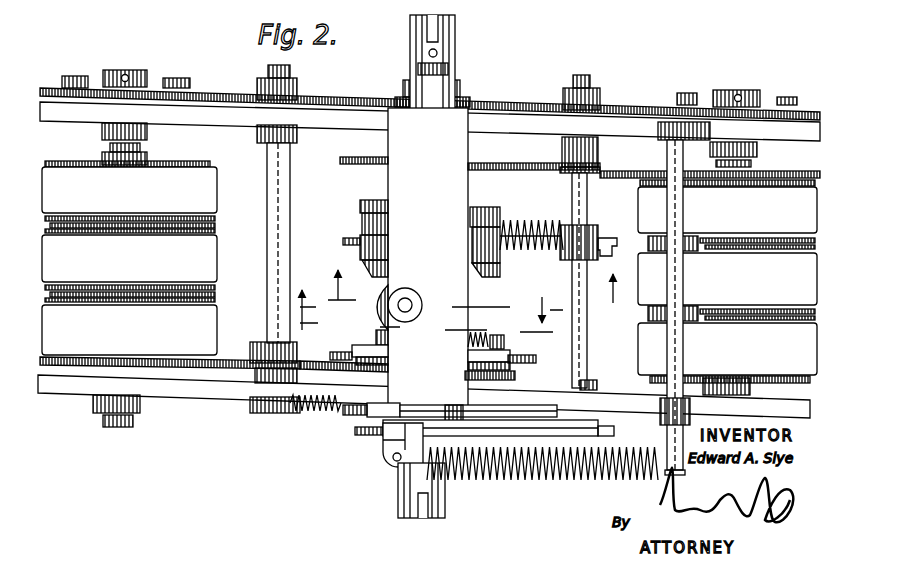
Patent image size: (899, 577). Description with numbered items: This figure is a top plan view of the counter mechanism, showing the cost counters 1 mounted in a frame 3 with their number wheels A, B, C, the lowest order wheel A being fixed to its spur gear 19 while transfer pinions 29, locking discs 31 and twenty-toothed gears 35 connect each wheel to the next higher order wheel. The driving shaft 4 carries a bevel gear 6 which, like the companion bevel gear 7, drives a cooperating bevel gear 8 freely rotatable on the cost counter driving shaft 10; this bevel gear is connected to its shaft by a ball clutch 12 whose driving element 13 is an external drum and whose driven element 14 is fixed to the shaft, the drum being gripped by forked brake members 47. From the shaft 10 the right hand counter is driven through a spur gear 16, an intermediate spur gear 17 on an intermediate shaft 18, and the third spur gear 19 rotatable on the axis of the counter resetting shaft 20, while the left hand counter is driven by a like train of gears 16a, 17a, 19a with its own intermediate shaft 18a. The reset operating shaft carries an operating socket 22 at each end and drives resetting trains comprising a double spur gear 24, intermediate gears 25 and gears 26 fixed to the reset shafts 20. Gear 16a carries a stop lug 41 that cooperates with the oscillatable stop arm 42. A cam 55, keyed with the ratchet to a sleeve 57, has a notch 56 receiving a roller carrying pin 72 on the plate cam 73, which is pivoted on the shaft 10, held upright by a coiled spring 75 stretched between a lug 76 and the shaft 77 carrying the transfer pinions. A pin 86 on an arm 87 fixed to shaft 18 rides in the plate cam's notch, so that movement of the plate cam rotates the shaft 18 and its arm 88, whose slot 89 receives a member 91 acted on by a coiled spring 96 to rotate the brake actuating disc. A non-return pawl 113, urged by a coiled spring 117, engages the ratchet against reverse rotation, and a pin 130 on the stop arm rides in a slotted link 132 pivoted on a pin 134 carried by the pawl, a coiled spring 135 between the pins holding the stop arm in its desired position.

The cost counter 1 is at (430, 266).
The frame 3 is at (515, 131).
The driving shaft 4 is at (413, 300).
The bevel gear 6 is at (376, 310).
The bevel gear 7 is at (431, 311).
The cooperating bevel gear 8 is at (488, 275).
The cost counter driving shaft 10 is at (427, 61).
The ball clutch 12 is at (357, 205).
The driving element 13 is at (360, 222).
The driven element 14 is at (375, 200).
The spur gear 16 is at (368, 160).
The spur gear 16a is at (376, 373).
The intermediate spur gear 17 is at (548, 166).
The intermediate spur gear 17a is at (330, 378).
The intermediate shaft 18 is at (572, 190).
The intermediate shaft 18a is at (270, 300).
The third spur gear 19 is at (668, 172).
The third spur gear 19a is at (424, 396).
The counter resetting shaft 20 is at (121, 73).
The operating socket 22 is at (455, 49).
The double spur gear 24 is at (481, 101).
The intermediate gear 25 is at (314, 97).
The gear 26 is at (208, 92).
The transfer pinion 29 is at (216, 226).
The locking disc 31 is at (208, 300).
The twenty-toothed gear 35 is at (215, 288).
The stop lug 41 is at (356, 352).
The stop arm 42 is at (522, 357).
The brake member 47 is at (343, 242).
The cam 55 is at (359, 437).
The notch 56 is at (392, 438).
The sleeve 57 is at (393, 458).
The roller carrying pin 72 is at (355, 426).
The plate cam 73 is at (546, 420).
The coiled spring 75 is at (590, 478).
The lug 76 is at (401, 468).
The shaft 77 is at (667, 433).
The pin 86 is at (458, 412).
The arm 87 is at (510, 414).
The arm 88 is at (568, 250).
The slot 89 is at (617, 246).
The member 91 is at (546, 224).
The coiled spring 96 is at (511, 222).
The non-return pawl 113 is at (426, 411).
The coiled spring 117 is at (312, 412).
The pin 130 is at (376, 337).
The link 132 is at (505, 335).
The pin 134 is at (514, 378).
The coiled spring 135 is at (478, 332).
The lowest order number wheel A is at (129, 330).
The next higher order number wheel B is at (131, 258).
The higher order number wheel C is at (130, 187).